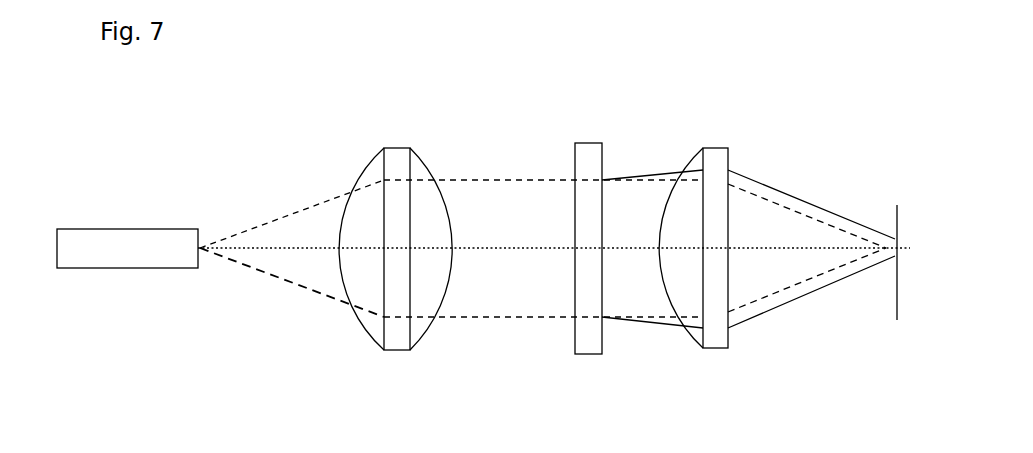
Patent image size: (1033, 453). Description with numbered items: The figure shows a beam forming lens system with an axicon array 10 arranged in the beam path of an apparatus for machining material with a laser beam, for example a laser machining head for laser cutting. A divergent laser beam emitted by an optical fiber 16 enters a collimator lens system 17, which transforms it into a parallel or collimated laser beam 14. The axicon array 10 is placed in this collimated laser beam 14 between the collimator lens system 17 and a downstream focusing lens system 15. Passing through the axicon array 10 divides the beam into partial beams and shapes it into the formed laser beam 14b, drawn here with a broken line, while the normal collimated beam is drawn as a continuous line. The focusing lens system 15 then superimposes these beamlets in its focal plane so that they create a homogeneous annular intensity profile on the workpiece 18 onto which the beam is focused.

The optical fiber 16 is at (152, 229).
The collimator lens system 17 is at (397, 148).
The collimated laser beam 14 is at (524, 180).
The axicon array 10 is at (586, 329).
The formed laser beam 14b is at (665, 170).
The focusing lens system 15 is at (702, 349).
The workpiece 18 is at (897, 210).